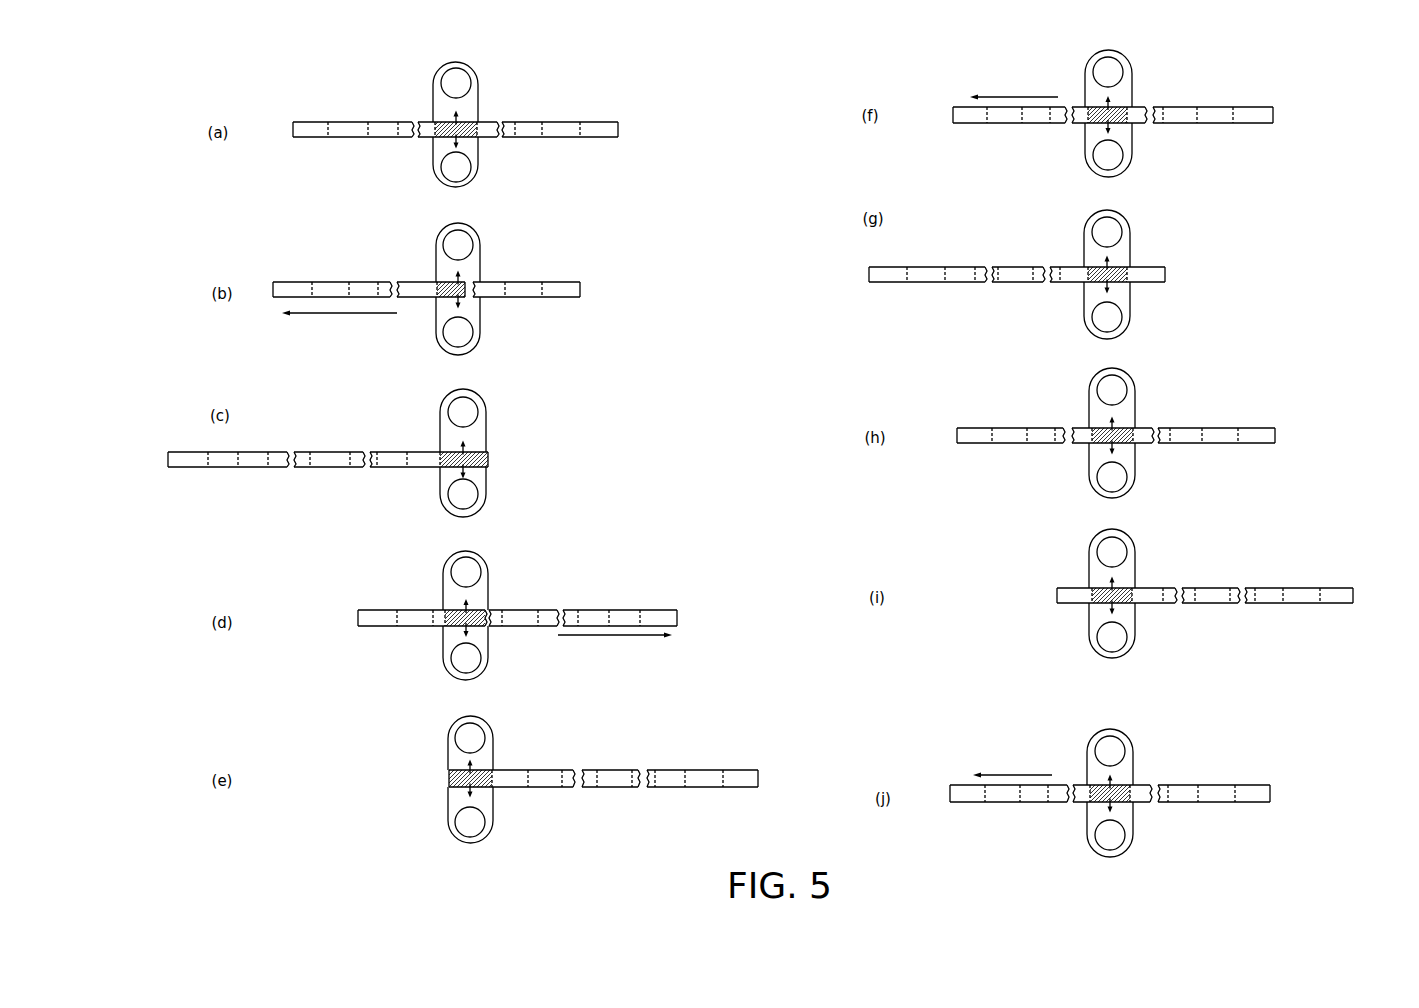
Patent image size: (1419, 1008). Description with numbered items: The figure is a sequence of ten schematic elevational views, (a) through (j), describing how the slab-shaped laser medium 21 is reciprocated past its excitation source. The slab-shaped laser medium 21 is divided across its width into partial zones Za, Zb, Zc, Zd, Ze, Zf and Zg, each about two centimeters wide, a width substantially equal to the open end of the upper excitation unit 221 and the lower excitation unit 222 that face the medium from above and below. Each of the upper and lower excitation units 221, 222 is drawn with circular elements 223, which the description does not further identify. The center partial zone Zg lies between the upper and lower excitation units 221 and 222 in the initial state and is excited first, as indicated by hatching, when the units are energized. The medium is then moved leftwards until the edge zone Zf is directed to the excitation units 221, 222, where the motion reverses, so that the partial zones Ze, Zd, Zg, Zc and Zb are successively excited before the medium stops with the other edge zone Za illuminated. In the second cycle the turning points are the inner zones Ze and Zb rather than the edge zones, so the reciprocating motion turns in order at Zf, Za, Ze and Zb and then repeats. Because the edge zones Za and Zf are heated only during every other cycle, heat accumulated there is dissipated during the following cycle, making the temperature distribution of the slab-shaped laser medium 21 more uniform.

The slab-shaped laser medium 21 is at (590, 121).
The upper excitation unit 221 is at (480, 68).
The lower excitation unit 222 is at (434, 182).
The rollers 223 is at (447, 80).
The edge zone Za is at (310, 138).
The partial zone Zb is at (346, 138).
The partial zone Zc is at (380, 138).
The partial zone Zd is at (525, 138).
The partial zone Ze is at (558, 138).
The edge zone Zf is at (595, 138).
The center partial zone Zg is at (478, 121).